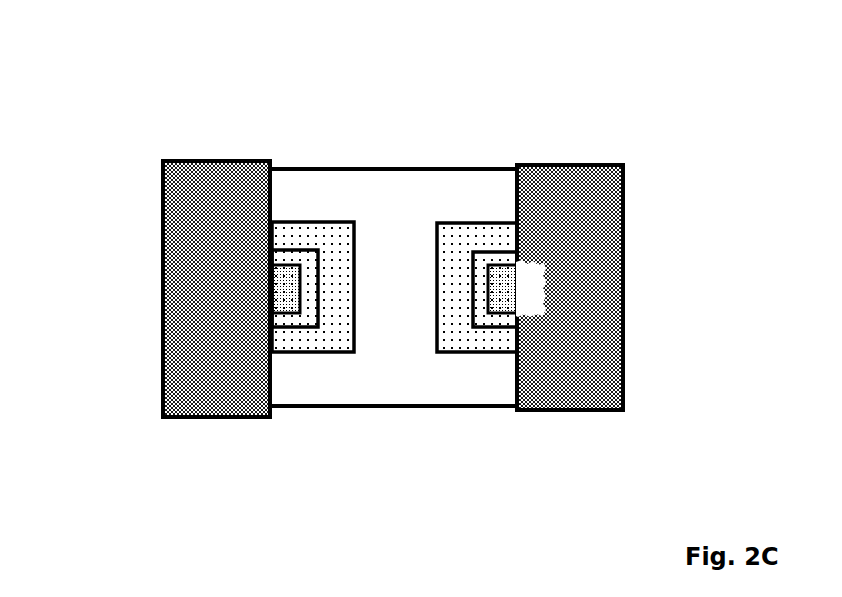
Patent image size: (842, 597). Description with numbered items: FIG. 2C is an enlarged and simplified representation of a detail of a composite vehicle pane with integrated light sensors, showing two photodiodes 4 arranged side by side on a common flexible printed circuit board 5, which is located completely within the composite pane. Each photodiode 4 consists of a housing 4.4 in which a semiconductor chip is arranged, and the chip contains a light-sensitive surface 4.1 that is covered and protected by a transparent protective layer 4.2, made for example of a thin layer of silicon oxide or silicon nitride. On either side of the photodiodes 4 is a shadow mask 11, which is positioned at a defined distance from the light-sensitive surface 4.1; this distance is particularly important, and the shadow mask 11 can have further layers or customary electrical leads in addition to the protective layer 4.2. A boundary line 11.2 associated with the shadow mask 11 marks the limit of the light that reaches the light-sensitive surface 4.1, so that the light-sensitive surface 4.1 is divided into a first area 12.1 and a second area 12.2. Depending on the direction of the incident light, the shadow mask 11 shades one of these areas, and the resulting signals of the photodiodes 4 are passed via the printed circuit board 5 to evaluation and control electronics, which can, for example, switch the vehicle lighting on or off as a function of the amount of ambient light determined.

The light sensor, photodiode 4 is at (306, 206).
The light-sensitive surface 4.1 is at (284, 268).
The transparent protective layer 4.2 is at (293, 333).
The housing 4.4 is at (337, 335).
The printed circuit board 5 is at (412, 167).
The shadow mask 11 is at (215, 382).
The boundary line 11.2 is at (526, 294).
The first area of the light-sensitive surface 12.1 is at (535, 261).
The second area of the light-sensitive surface 12.2 is at (480, 257).